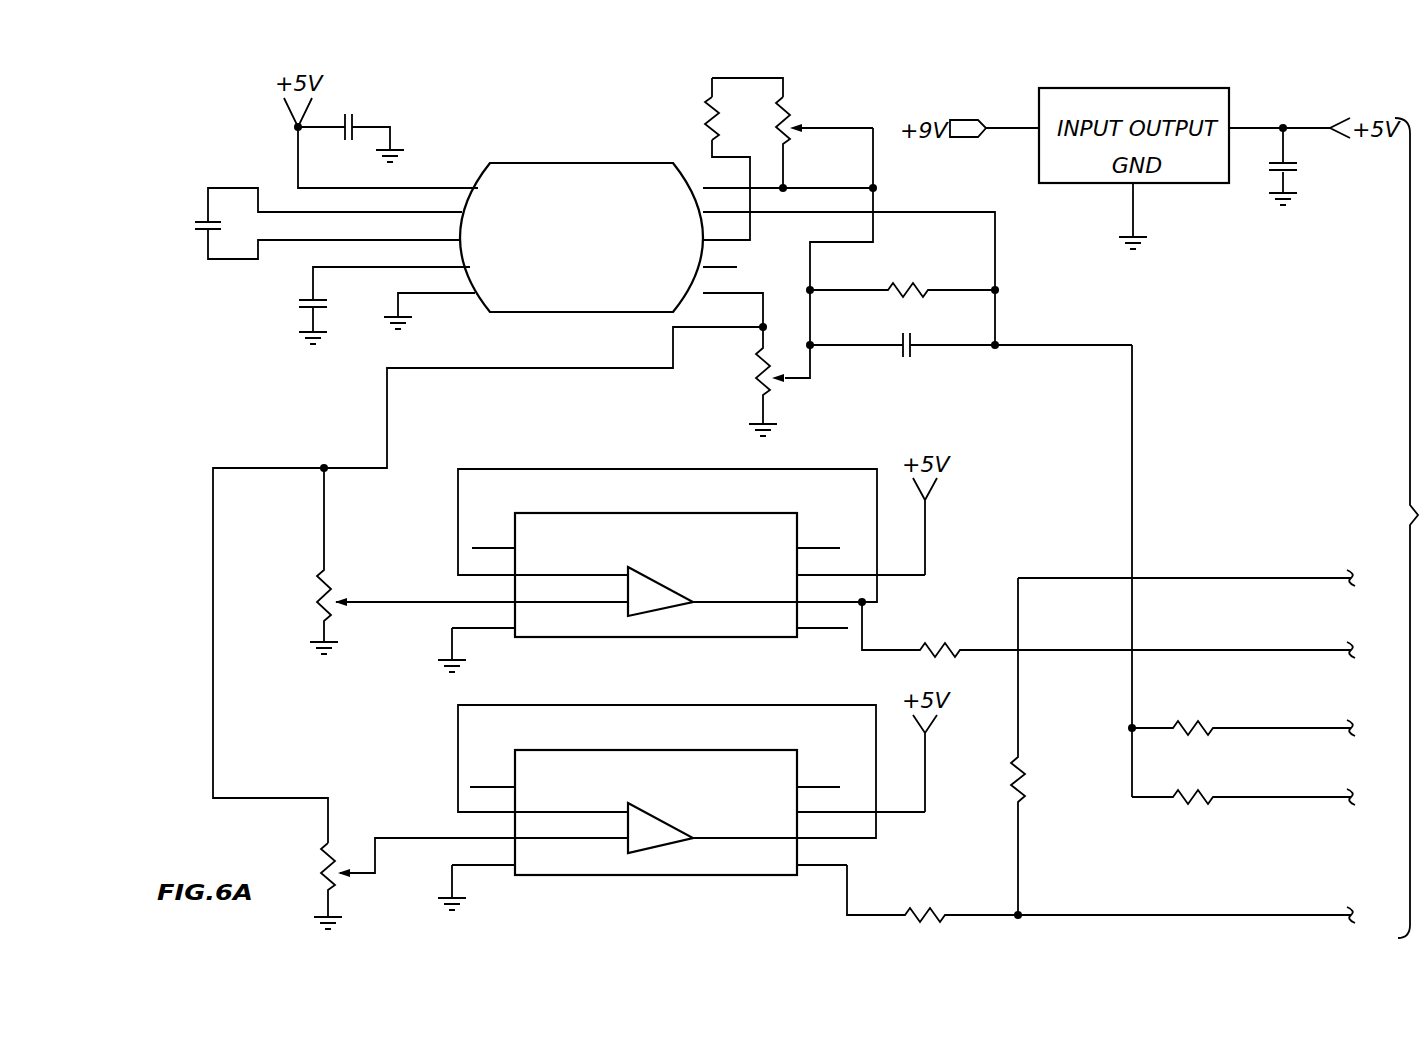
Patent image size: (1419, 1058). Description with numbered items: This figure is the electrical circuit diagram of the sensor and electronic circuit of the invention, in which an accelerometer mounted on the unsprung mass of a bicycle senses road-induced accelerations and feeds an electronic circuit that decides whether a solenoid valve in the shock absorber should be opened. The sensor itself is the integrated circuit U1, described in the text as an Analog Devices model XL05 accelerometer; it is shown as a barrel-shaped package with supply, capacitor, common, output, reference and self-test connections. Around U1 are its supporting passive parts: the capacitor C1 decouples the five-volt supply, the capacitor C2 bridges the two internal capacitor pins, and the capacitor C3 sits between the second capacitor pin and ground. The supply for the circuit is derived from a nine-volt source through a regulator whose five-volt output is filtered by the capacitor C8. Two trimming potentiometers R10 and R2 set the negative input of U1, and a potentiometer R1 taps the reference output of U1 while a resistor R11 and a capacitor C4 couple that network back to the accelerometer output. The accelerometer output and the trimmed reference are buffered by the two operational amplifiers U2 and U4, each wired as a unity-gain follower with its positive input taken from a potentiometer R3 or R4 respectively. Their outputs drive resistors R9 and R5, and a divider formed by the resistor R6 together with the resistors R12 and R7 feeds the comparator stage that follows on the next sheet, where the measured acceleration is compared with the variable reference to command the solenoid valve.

The capacitor C1 is at (353, 118).
The capacitor C2 is at (203, 220).
The capacitor C3 is at (302, 305).
The capacitor C4 is at (912, 338).
The capacitor C8 is at (1296, 170).
The potentiometer R1 is at (757, 378).
The potentiometer R2 is at (787, 120).
The potentiometer R3 is at (320, 578).
The potentiometer R4 is at (324, 850).
The resistor R5 is at (925, 908).
The resistor R6 is at (1008, 777).
The resistor R7 is at (1200, 805).
The resistor R9 is at (942, 640).
The resistor R10 is at (707, 120).
The resistor R11 is at (910, 286).
The resistor R12 is at (1210, 720).
The sensor/converter integrated circuit U1 is at (557, 163).
The operational amplifier U2 is at (620, 513).
The operational amplifier U4 is at (616, 750).